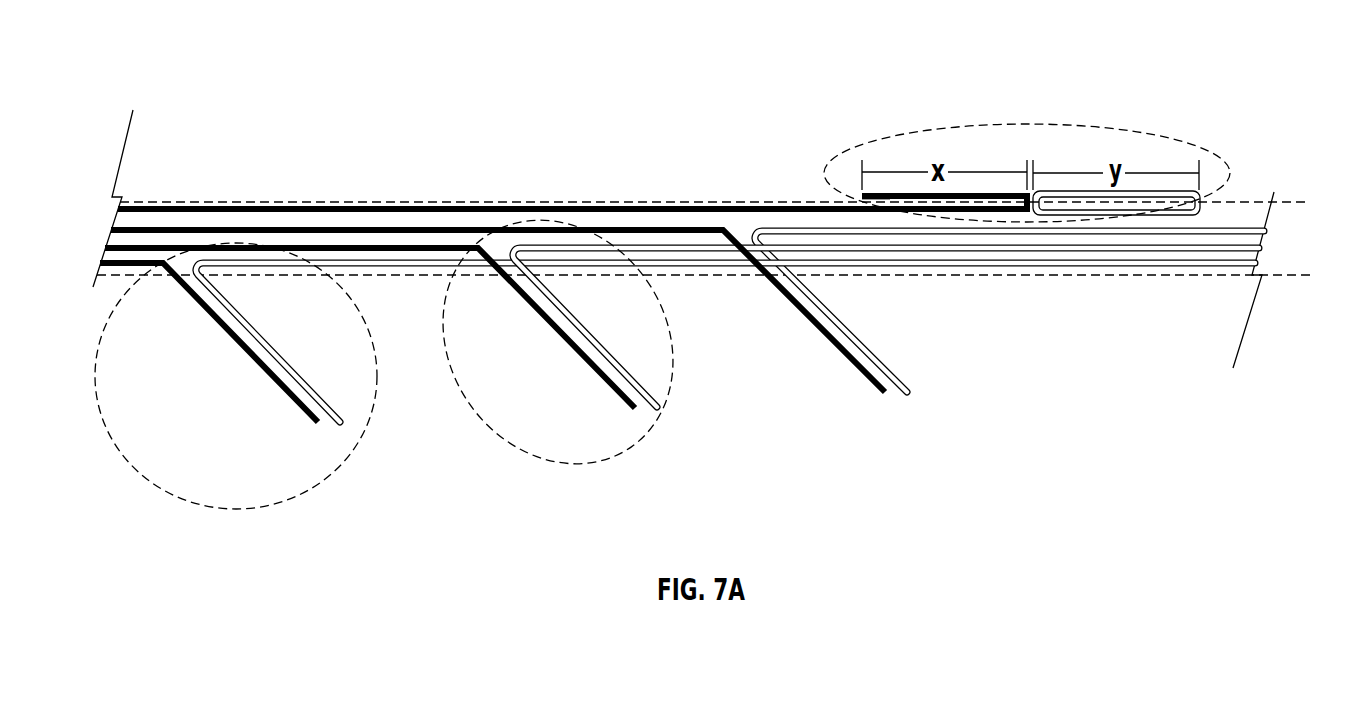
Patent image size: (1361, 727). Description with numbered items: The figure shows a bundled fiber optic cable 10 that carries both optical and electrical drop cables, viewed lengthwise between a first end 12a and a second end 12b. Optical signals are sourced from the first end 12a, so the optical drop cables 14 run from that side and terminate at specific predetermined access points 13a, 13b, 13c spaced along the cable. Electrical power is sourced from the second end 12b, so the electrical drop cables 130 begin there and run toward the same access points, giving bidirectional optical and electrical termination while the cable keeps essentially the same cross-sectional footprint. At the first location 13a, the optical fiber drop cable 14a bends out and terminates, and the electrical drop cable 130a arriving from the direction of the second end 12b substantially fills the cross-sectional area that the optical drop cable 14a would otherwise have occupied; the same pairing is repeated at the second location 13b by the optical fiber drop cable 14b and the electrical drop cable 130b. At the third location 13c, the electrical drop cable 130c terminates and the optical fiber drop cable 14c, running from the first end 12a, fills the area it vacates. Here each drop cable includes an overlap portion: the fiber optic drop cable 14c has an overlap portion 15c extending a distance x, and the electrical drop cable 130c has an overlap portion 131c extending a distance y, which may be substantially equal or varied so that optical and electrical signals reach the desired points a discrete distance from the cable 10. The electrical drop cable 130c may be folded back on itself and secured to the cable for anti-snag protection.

The bundled fiber optic cable 10 is at (407, 198).
The first end 12a is at (88, 218).
The second end 12b is at (1265, 228).
The predetermined location 13a is at (298, 510).
The predetermined location 13b is at (668, 325).
The predetermined location 13c is at (962, 112).
The optical drop cables 14 is at (569, 253).
The optical fiber drop cable 14a is at (258, 366).
The optical fiber drop cable 14b is at (584, 360).
The optical fiber drop cable 14c is at (965, 206).
The overlap portion 15c is at (885, 194).
The electrical drop cables 130 is at (730, 263).
The electrical drop cable 130a is at (330, 403).
The electrical drop cable 130b is at (647, 392).
The electrical drop cable 130c is at (1116, 143).
The overlap portion 131c is at (1069, 198).